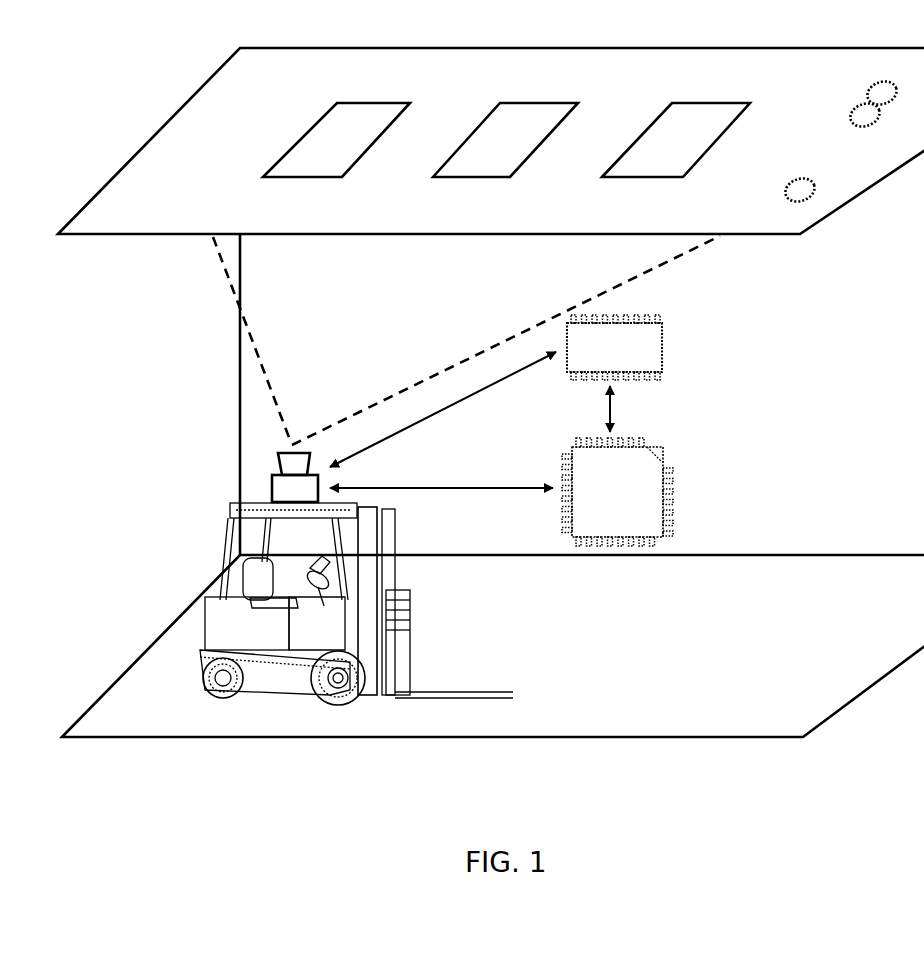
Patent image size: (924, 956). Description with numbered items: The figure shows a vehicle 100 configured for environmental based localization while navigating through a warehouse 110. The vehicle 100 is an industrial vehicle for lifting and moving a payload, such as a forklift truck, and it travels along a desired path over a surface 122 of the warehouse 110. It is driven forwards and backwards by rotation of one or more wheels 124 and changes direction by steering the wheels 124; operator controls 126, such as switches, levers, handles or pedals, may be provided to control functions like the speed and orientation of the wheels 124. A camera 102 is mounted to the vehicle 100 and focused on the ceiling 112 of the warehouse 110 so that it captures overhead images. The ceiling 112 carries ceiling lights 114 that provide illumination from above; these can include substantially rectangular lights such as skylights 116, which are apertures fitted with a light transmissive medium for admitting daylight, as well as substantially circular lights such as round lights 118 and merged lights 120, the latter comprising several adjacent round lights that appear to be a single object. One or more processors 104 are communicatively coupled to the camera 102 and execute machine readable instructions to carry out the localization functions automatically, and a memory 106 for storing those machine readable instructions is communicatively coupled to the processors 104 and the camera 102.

The vehicle 100 is at (276, 680).
The camera 102 is at (272, 490).
The processors 104 is at (650, 355).
The memory 106 is at (650, 465).
The warehouse 110 is at (114, 110).
The ceiling 112 is at (573, 88).
The ceiling lights 114 is at (284, 127).
The skylights 116 is at (349, 156).
The round lights 118 is at (815, 190).
The merged lights 120 is at (848, 96).
The surface 122 is at (619, 627).
The wheels 124 is at (211, 687).
The operator controls 126 is at (295, 589).